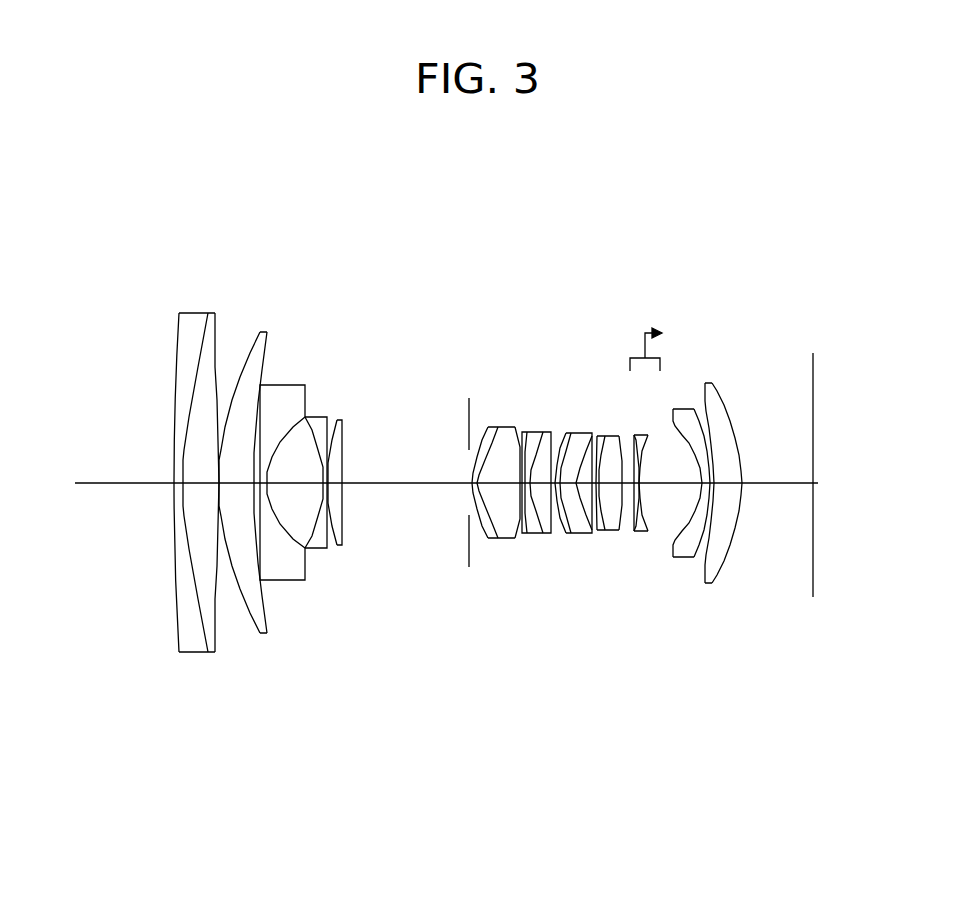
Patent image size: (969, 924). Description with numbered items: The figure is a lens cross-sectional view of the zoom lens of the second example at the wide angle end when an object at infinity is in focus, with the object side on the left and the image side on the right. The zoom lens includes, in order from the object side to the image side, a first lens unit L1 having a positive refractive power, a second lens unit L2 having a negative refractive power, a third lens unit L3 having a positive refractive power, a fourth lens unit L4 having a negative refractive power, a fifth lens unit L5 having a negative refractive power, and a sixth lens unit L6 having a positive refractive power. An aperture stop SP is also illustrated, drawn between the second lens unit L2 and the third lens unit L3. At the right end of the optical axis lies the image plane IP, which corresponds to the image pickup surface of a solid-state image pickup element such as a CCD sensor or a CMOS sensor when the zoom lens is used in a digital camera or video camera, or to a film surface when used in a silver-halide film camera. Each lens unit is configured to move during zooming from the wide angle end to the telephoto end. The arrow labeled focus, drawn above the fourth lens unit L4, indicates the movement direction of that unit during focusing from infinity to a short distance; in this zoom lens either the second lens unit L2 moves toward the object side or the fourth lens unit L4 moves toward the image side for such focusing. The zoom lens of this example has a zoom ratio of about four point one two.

The first lens unit L1 is at (107, 802).
The second lens unit L2 is at (274, 801).
The third lens unit L3 is at (615, 650).
The fourth lens unit L4 is at (541, 803).
The fifth lens unit L5 is at (587, 804).
The sixth lens unit L6 is at (654, 803).
The aperture stop SP is at (469, 415).
The image plane IP is at (811, 393).
The focusing arrow focus is at (606, 343).